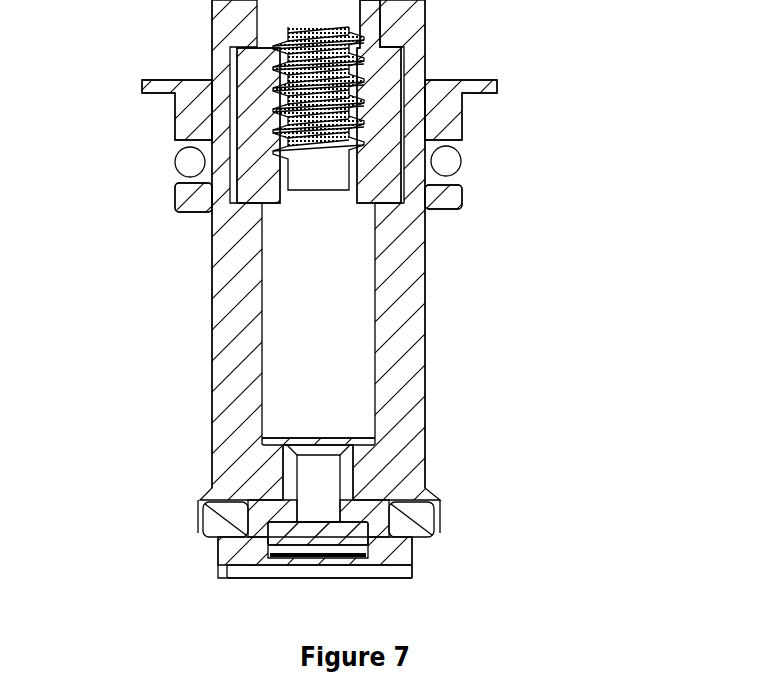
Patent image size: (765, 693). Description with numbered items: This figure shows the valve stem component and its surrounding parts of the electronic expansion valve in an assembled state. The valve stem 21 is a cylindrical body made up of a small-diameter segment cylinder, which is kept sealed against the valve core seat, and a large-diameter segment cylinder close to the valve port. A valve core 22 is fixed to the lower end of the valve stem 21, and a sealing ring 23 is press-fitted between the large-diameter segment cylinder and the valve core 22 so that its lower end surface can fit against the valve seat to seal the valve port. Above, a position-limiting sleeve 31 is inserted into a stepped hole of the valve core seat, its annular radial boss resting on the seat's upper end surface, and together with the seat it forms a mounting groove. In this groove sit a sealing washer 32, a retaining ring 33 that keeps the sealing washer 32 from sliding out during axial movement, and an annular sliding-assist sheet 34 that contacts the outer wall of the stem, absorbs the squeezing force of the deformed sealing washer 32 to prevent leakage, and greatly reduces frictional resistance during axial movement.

The valve stem 21 is at (422, 308).
The valve core 22 is at (403, 558).
The sealing ring 23 is at (437, 508).
The position-limiting sleeve 31 is at (432, 106).
The sealing washer 32 is at (176, 160).
The retaining ring 33 is at (176, 208).
The sliding-assist sheet 34 is at (432, 173).